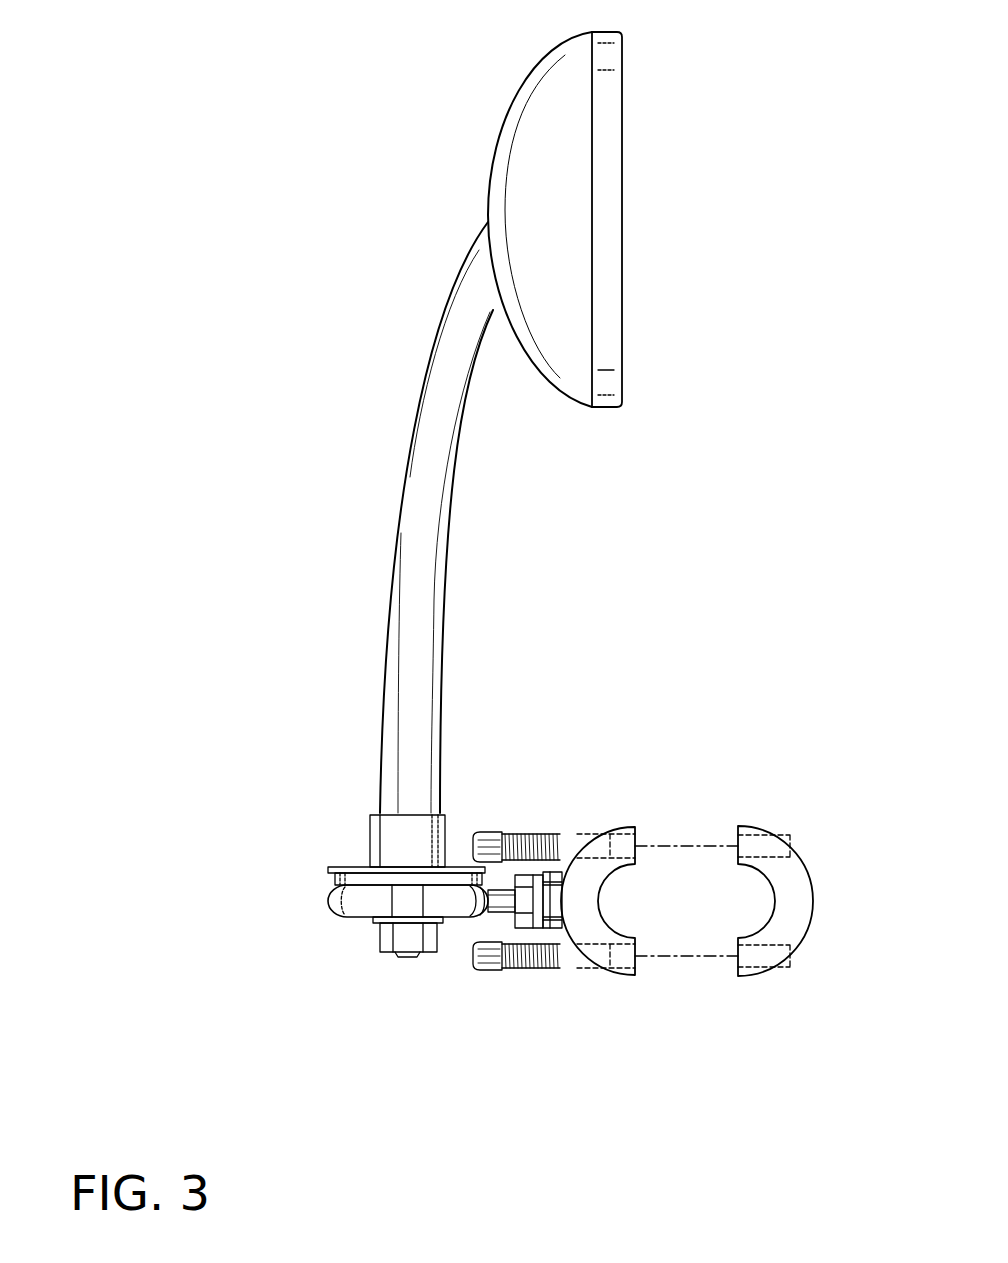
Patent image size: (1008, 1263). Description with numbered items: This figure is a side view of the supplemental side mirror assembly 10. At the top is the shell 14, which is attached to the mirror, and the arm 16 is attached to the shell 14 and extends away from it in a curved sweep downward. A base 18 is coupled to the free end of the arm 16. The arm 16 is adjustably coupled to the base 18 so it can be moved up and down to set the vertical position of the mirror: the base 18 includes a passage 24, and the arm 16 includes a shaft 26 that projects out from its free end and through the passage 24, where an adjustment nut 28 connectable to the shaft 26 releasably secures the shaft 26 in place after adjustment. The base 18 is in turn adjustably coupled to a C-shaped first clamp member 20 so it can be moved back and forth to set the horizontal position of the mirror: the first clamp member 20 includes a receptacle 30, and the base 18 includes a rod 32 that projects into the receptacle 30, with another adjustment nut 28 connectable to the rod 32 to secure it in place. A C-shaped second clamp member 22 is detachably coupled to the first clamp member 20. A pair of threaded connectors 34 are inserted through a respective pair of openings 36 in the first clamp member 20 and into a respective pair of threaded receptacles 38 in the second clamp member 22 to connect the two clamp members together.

The supplemental side mirror assembly 10 is at (296, 150).
The shell 14 is at (533, 135).
The arm 16 is at (415, 505).
The base 18 is at (343, 897).
The first clamp member 20 is at (616, 803).
The second clamp member 22 is at (757, 803).
The passage 24 is at (393, 902).
The shaft 26 is at (415, 955).
The adjustment nut 28 is at (383, 940).
The receptacle 30 is at (552, 877).
The rod 32 is at (495, 910).
The threaded connectors 34 is at (492, 838).
The openings 36 is at (628, 843).
The threaded receptacles 38 is at (777, 848).